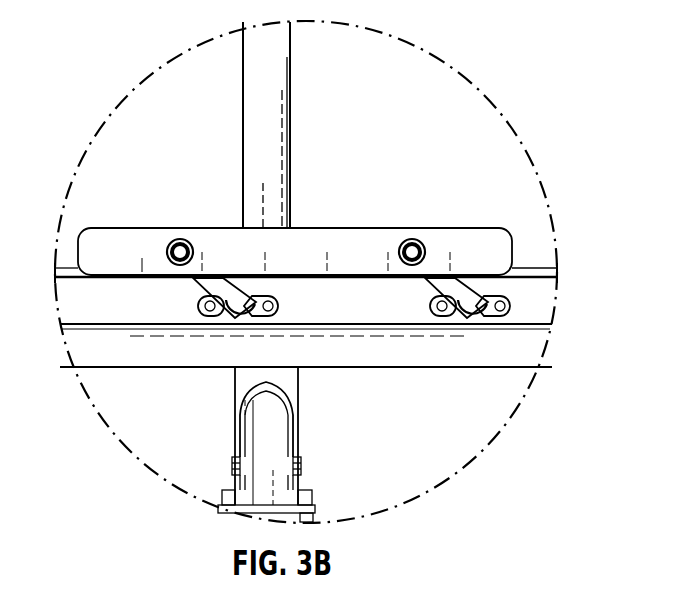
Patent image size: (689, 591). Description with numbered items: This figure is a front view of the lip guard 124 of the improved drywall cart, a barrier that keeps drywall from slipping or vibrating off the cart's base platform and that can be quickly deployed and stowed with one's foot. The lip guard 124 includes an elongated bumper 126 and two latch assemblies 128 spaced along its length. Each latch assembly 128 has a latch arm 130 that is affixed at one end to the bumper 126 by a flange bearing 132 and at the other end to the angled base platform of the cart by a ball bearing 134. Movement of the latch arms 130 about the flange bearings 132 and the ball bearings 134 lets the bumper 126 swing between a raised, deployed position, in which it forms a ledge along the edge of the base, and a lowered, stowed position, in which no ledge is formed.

The lip guard 124 is at (352, 209).
The bumper 126 is at (358, 257).
The latch assembly 128 is at (196, 288).
The latch arm 130 is at (225, 288).
The flange bearing 132 is at (178, 250).
The ball bearing 134 is at (240, 318).